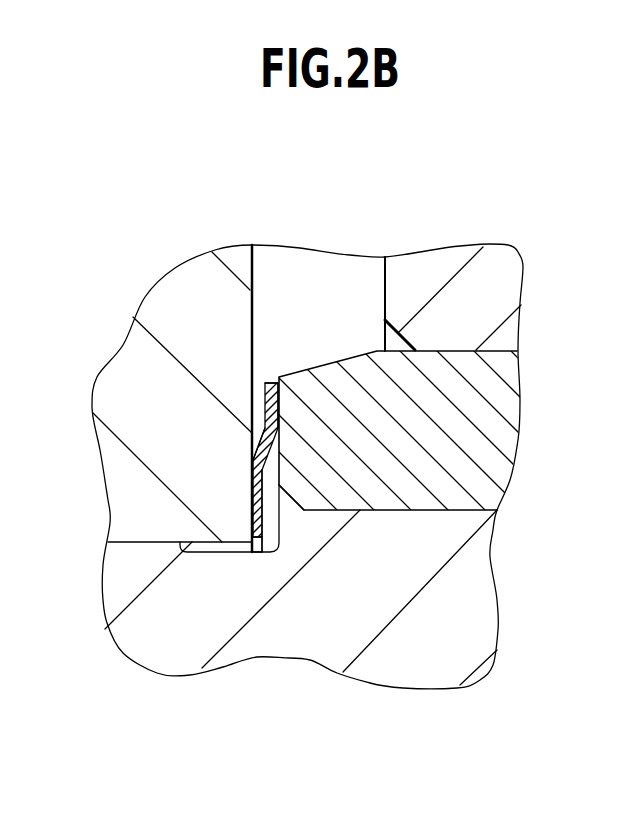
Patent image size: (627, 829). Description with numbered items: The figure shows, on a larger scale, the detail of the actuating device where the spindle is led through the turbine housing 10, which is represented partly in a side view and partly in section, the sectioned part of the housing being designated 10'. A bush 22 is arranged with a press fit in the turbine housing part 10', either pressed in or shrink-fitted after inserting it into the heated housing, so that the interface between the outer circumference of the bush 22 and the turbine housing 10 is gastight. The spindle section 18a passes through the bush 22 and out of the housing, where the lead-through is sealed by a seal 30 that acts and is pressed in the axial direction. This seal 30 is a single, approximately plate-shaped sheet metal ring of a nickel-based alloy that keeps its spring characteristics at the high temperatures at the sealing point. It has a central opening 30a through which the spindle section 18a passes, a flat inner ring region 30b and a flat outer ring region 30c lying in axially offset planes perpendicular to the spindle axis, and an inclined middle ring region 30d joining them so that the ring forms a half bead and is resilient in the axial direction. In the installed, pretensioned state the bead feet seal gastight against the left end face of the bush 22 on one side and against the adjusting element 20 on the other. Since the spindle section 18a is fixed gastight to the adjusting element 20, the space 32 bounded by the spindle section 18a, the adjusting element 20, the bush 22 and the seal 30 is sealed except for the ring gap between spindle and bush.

The turbine housing 10 is at (381, 272).
The turbine housing part shown in section 10' is at (469, 271).
The spindle section 18a is at (465, 620).
The adjusting element 20 is at (222, 305).
The bush 22 is at (497, 403).
The seal 30 is at (245, 402).
The central opening 30a is at (261, 547).
The inner ring region 30b is at (258, 505).
The outer ring region 30c is at (271, 378).
The middle ring region 30d is at (258, 449).
The space 32 is at (287, 515).